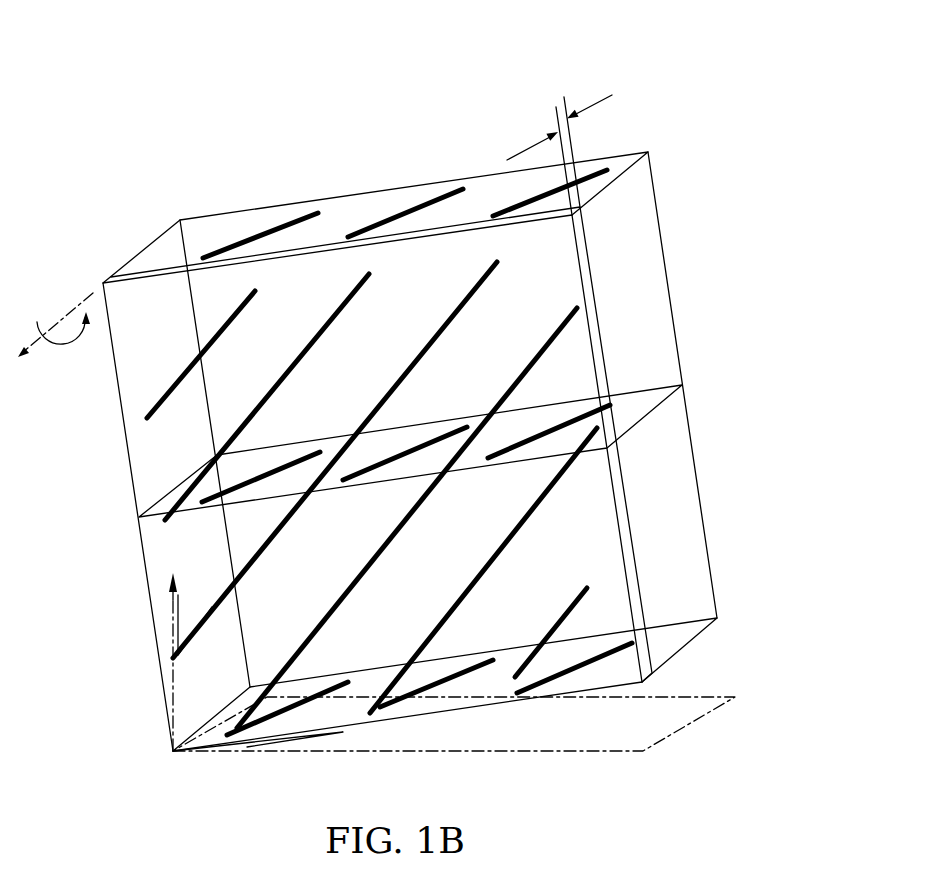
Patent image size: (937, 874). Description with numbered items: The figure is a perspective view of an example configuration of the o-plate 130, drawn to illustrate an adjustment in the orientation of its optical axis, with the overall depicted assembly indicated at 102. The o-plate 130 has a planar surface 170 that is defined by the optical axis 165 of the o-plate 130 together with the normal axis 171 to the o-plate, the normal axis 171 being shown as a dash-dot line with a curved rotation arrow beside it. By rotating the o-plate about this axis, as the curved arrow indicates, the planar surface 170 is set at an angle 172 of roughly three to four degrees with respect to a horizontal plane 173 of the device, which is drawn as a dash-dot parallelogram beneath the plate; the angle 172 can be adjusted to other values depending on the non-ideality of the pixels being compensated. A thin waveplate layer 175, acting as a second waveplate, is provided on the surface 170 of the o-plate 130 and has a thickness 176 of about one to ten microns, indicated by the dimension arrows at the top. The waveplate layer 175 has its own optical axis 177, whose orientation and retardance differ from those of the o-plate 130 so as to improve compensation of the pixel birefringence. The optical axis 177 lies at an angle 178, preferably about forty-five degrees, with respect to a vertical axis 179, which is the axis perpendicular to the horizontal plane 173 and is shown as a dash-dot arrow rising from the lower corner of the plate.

The optical assembly 102 is at (147, 58).
The o-plate 130 is at (415, 185).
The optical axis 165 is at (303, 217).
The planar surface 170 is at (142, 463).
The normal axis 171 is at (85, 295).
The angle 172 is at (362, 740).
The horizontal plane 173 is at (542, 745).
The thin waveplate layer 175 is at (595, 322).
The thickness 176 is at (532, 148).
The optical axis 177 is at (437, 524).
The angle 178 is at (190, 597).
The vertical axis 179 is at (172, 608).